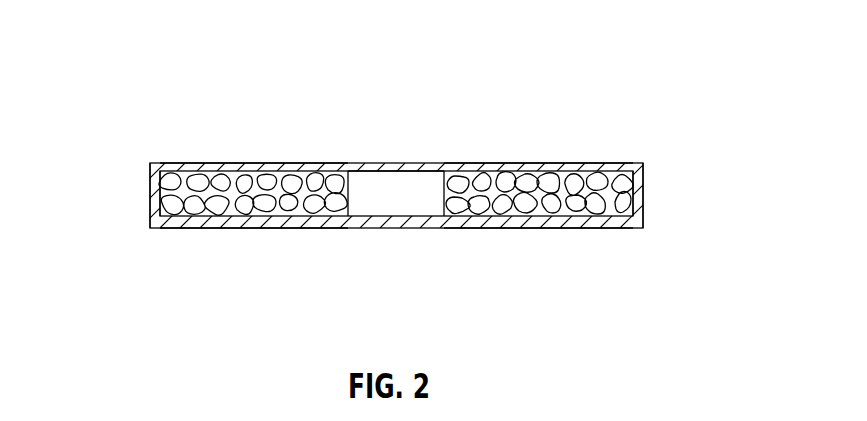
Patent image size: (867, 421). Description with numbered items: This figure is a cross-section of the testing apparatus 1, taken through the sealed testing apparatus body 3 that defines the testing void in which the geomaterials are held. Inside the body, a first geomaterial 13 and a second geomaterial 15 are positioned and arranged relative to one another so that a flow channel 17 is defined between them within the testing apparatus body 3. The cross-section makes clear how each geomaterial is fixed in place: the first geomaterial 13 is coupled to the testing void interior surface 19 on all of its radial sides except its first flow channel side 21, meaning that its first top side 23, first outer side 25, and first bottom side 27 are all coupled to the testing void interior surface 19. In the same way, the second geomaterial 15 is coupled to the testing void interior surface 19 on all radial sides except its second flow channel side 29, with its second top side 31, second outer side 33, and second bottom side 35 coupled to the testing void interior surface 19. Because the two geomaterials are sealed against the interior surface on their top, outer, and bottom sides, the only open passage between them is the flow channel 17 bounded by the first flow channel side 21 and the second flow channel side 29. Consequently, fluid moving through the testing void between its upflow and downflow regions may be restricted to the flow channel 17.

The testing apparatus 1 is at (691, 57).
The testing apparatus body 3 is at (645, 175).
The first geomaterial 13 is at (150, 172).
The second geomaterial 15 is at (597, 172).
The flow channel 17 is at (388, 200).
The testing void interior surface 19 is at (401, 180).
The first flow channel side 21 is at (354, 173).
The first top side 23 is at (204, 157).
The first outer side 25 is at (145, 198).
The first bottom side 27 is at (243, 235).
The second flow channel side 29 is at (436, 173).
The second top side 31 is at (521, 157).
The second outer side 33 is at (643, 200).
The second bottom side 35 is at (540, 235).